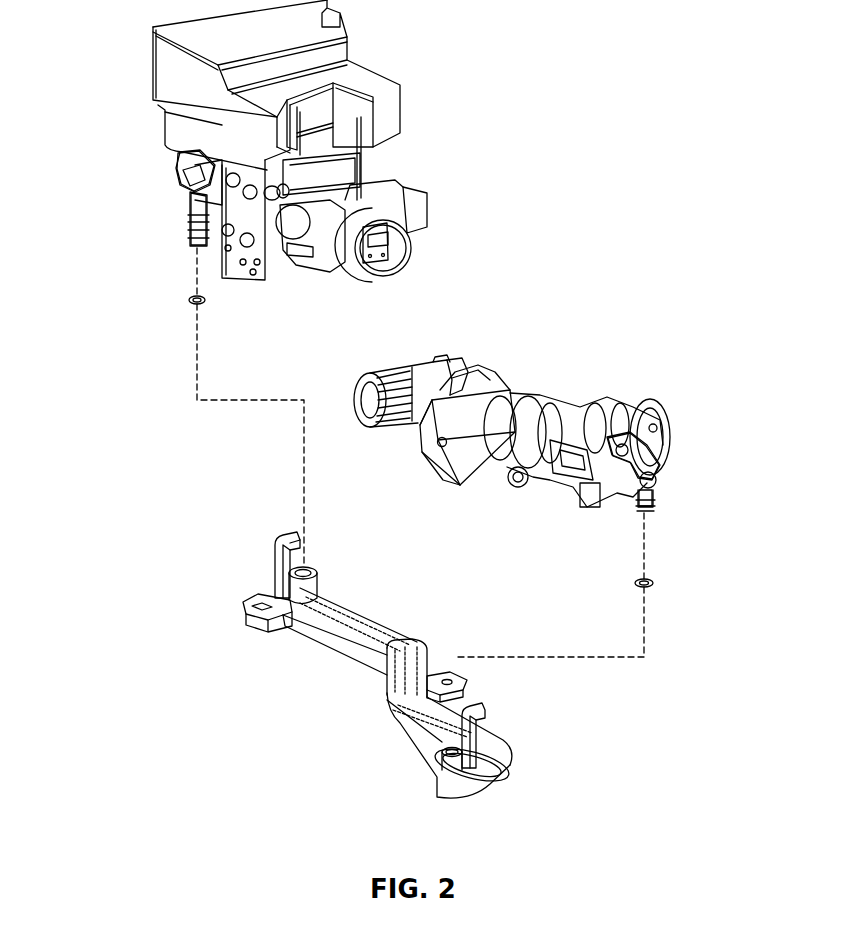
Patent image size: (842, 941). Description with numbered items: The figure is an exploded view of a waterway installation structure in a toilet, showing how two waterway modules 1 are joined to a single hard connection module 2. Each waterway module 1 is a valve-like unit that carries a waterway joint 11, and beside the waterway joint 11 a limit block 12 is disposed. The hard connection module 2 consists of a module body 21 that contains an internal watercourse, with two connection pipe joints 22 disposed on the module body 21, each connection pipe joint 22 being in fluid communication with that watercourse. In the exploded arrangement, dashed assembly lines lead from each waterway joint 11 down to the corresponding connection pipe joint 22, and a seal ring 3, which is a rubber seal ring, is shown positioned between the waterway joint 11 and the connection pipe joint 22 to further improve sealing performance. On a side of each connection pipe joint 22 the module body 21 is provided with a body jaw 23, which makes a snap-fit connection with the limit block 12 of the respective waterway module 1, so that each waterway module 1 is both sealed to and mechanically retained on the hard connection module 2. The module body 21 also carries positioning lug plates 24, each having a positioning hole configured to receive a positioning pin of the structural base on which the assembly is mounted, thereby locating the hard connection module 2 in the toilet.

The waterway module 1 is at (148, 55).
The waterway joint 11 is at (197, 210).
The limit block 12 is at (182, 188).
The seal ring 3 is at (183, 289).
The hard connection module 2 is at (372, 668).
The module body 21 is at (371, 660).
The connection pipe joint 22 is at (313, 573).
The body jaw 23 is at (266, 547).
The positioning lug plate 24 is at (257, 614).